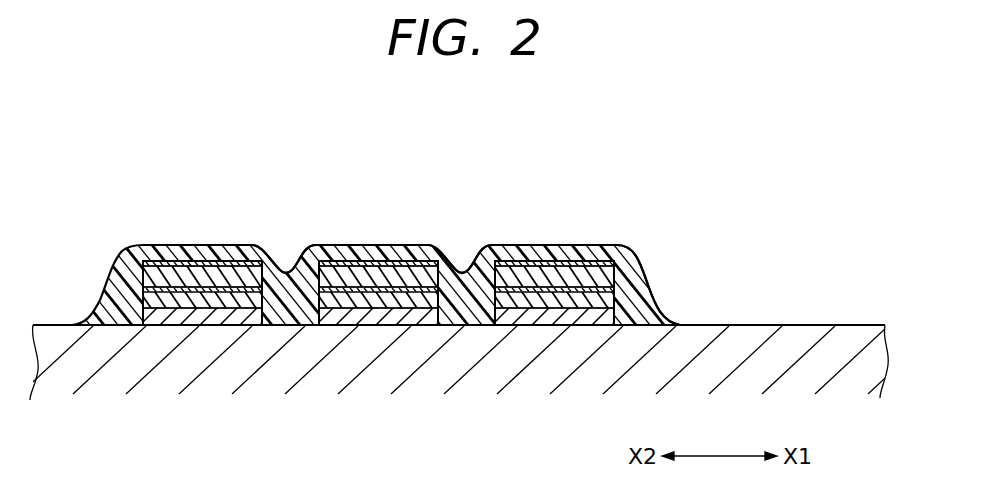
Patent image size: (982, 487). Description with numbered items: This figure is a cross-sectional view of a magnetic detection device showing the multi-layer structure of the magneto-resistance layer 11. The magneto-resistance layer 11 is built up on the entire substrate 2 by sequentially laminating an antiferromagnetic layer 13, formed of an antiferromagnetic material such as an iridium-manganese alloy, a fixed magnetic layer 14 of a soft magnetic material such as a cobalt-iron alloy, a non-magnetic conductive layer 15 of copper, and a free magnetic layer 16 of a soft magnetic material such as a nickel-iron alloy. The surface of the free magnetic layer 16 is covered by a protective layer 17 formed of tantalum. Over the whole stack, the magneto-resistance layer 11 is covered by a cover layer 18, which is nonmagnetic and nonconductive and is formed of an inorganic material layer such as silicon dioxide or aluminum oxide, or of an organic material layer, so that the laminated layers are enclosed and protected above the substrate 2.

The substrate 2 is at (810, 348).
The magneto-resistance layer 11 is at (473, 197).
The antiferromagnetic layer 13 is at (208, 313).
The fixed magnetic layer 14 is at (162, 296).
The non-magnetic conductive layer 15 is at (164, 272).
The free magnetic layer 16 is at (205, 265).
The protective layer 17 is at (243, 256).
The cover layer 18 is at (643, 263).